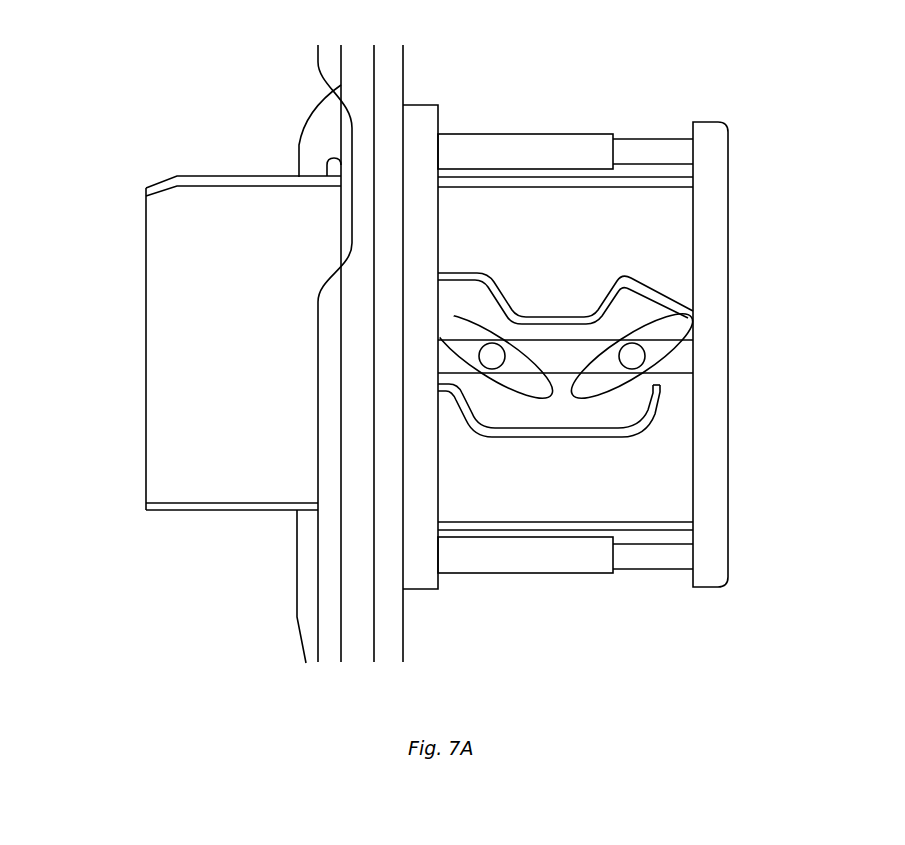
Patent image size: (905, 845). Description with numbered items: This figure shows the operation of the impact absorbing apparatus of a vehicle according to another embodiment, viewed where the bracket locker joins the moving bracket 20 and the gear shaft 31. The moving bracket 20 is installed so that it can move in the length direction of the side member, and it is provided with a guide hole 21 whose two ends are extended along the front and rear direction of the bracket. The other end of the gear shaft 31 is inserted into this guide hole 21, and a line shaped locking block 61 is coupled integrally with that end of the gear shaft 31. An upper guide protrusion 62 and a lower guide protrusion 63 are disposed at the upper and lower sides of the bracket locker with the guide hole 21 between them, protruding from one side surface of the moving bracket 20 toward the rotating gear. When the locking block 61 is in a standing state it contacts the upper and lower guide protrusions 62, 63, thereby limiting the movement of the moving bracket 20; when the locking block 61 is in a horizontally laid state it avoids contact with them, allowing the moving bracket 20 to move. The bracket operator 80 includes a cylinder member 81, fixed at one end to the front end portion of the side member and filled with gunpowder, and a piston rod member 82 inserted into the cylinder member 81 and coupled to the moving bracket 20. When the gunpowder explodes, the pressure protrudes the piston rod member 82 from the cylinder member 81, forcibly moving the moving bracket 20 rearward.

The moving bracket 20 is at (167, 273).
The guide hole 21 is at (560, 357).
The gear shaft 31 is at (645, 356).
The locking block 61 is at (670, 326).
The upper guide protrusion 62 is at (657, 285).
The lower guide protrusion 63 is at (613, 435).
The bracket operator 80 is at (556, 122).
The cylinder member 81 is at (474, 148).
The piston rod member 82 is at (640, 148).